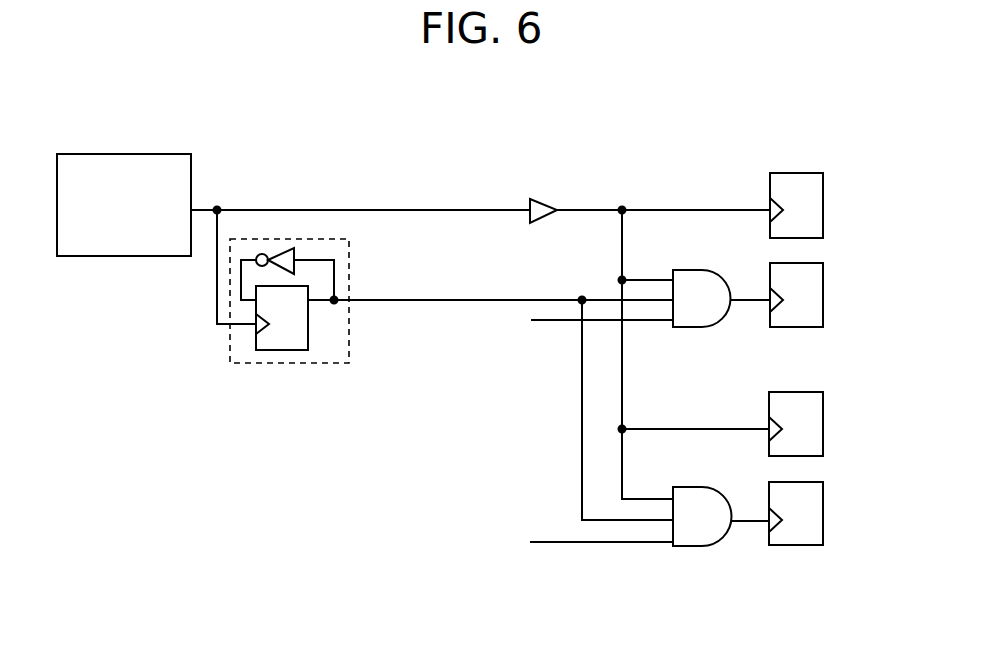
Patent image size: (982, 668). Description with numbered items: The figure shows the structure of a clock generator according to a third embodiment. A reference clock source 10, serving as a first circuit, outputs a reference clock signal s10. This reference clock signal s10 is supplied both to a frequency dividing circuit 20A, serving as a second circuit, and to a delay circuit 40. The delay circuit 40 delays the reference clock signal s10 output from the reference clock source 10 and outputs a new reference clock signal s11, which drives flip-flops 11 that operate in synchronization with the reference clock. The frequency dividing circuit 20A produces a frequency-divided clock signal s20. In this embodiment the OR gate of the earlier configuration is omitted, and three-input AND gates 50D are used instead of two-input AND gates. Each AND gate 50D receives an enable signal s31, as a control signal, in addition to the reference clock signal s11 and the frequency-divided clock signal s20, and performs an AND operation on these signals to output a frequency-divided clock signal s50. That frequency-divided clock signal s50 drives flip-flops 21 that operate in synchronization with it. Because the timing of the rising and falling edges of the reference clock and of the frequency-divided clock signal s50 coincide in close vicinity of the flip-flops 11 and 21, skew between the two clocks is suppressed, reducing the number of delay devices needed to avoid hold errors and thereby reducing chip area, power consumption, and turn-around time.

The reference clock source 10 is at (191, 180).
The frequency dividing circuit 20A is at (230, 338).
The delay circuit 40 is at (545, 199).
The flip-flop 11 is at (823, 203).
The flip-flop 21 is at (823, 295).
The three-input AND gate 50D is at (692, 327).
The reference clock signal s10 is at (418, 210).
The frequency-divided clock signal s20 is at (428, 300).
The reference clock signal s11 is at (588, 212).
The enable signal s31 is at (548, 322).
The frequency-divided clock signal s50 is at (749, 298).